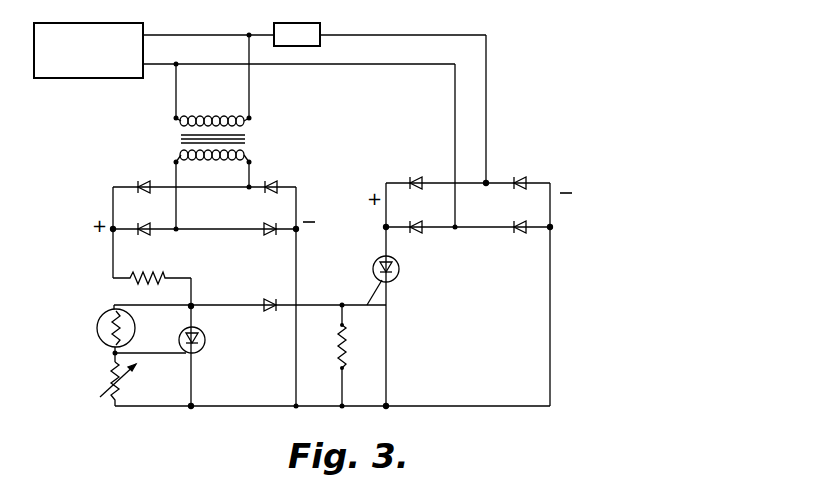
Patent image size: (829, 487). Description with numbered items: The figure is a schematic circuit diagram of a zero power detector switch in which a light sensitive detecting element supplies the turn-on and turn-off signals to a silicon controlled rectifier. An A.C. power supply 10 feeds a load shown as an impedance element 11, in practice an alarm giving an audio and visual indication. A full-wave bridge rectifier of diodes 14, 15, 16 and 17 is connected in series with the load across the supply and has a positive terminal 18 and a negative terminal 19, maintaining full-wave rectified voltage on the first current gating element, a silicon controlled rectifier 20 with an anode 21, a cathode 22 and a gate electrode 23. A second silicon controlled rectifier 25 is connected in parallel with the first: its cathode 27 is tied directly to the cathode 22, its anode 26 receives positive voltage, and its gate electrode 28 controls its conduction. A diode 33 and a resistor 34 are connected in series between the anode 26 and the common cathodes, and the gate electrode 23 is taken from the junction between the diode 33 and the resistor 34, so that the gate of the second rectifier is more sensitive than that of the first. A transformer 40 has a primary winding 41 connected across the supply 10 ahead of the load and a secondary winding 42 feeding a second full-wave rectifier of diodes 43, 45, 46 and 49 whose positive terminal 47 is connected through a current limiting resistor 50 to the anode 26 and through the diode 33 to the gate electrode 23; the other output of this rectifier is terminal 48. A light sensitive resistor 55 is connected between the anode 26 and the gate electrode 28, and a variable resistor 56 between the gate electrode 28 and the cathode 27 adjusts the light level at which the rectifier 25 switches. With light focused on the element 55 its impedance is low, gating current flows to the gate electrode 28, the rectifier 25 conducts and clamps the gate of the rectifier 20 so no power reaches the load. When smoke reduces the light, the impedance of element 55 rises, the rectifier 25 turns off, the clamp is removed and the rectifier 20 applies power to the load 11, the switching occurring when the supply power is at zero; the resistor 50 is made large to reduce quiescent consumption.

The A.C. power supply 10 is at (143, 24).
The impedance element 11 is at (320, 24).
The diode 14 is at (416, 180).
The diode 15 is at (520, 178).
The diode 16 is at (416, 221).
The diode 17 is at (517, 221).
The positive terminal 18 is at (386, 227).
The negative terminal 19 is at (552, 224).
The silicon controlled rectifier 20 is at (409, 295).
The anode 21 is at (398, 261).
The cathode 22 is at (392, 280).
The gate electrode 23 is at (367, 304).
The silicon controlled rectifier 25 is at (205, 343).
The anode 26 is at (198, 328).
The cathode 27 is at (197, 352).
The gate electrode 28 is at (184, 355).
The diode 33 is at (268, 300).
The resistor 34 is at (347, 345).
The transformer 40 is at (230, 142).
The primary winding 41 is at (212, 120).
The secondary winding 42 is at (215, 162).
The diode 43 is at (141, 181).
The diode 45 is at (142, 232).
The diode 46 is at (270, 235).
The positive terminal 47 is at (113, 210).
The negative output terminal 48 is at (296, 200).
The diode 49 is at (280, 182).
The resistor 50 is at (163, 276).
The light sensitive resistor 55 is at (98, 328).
The variable resistor 56 is at (106, 383).